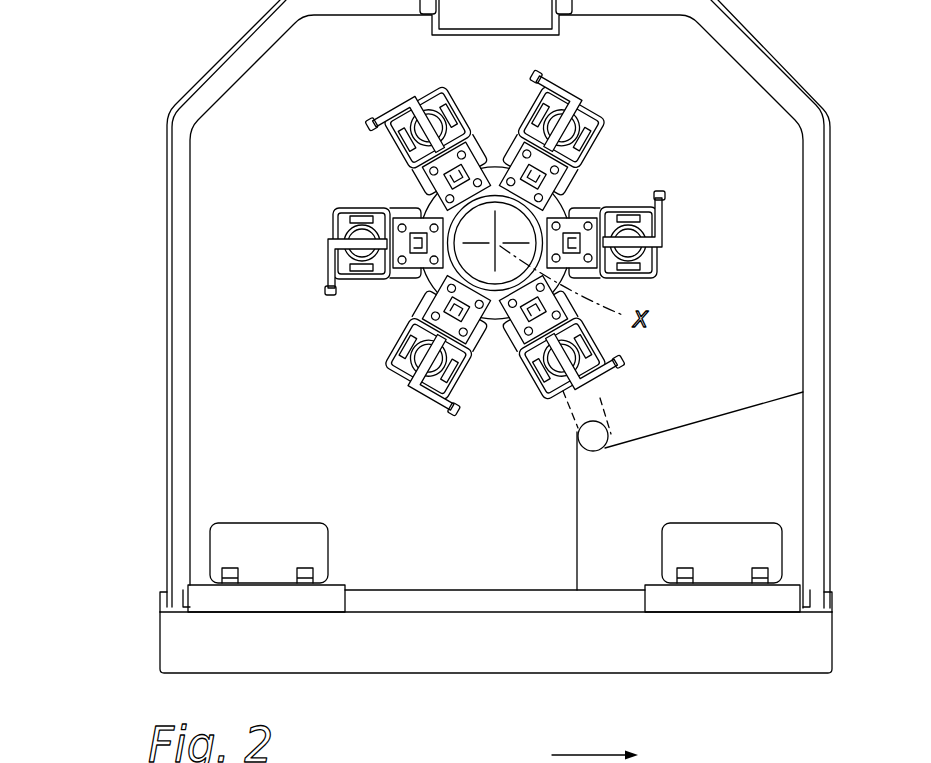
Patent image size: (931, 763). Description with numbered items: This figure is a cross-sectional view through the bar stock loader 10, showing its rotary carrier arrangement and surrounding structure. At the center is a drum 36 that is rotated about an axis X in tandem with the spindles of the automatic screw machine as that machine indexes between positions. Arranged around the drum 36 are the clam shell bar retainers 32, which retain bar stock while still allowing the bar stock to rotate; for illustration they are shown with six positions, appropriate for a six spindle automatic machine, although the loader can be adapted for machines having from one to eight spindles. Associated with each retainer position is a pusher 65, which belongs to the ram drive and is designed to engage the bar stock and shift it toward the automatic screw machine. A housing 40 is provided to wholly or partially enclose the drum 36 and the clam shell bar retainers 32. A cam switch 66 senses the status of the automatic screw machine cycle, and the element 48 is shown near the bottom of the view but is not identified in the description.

The bar stock loader 10 is at (160, 374).
The housing 40 is at (178, 487).
The clam shell bar retainers 32 is at (523, 110).
The pusher 65 is at (548, 78).
The drum 36 is at (548, 220).
The cam switch 66 is at (713, 443).
The base conveyor 48 is at (426, 762).